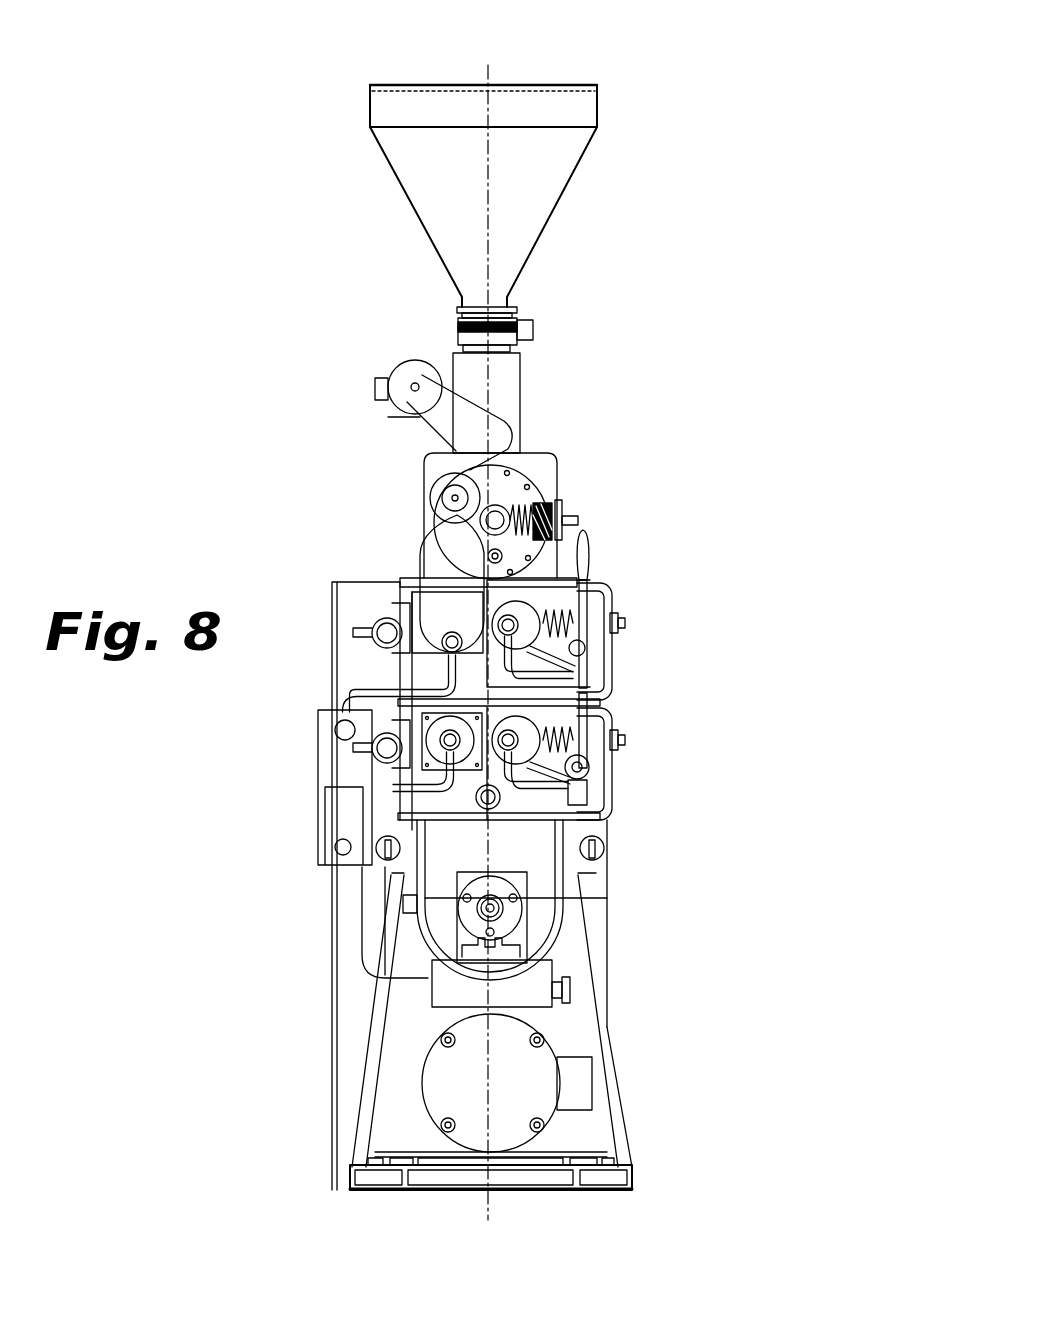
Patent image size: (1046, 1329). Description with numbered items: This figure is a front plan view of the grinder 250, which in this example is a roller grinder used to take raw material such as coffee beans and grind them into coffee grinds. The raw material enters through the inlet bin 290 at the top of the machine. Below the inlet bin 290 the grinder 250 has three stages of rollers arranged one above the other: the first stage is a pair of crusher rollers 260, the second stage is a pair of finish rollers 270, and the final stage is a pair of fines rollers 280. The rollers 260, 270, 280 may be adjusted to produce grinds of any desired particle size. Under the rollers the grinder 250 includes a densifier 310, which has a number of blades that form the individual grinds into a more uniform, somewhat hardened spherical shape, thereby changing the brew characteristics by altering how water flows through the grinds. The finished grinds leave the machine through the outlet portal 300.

The grinder 250 is at (366, 70).
The inlet bin 290 is at (598, 98).
The crusher rollers 260 is at (557, 483).
The finish rollers 270 is at (593, 580).
The fines rollers 280 is at (603, 700).
The densifier 310 is at (603, 812).
The outlet portal 300 is at (607, 898).